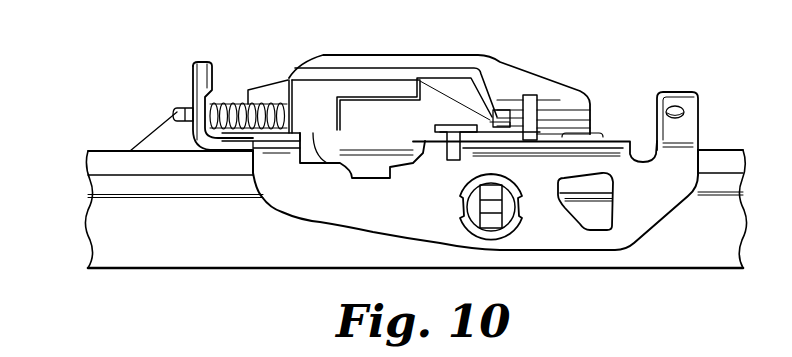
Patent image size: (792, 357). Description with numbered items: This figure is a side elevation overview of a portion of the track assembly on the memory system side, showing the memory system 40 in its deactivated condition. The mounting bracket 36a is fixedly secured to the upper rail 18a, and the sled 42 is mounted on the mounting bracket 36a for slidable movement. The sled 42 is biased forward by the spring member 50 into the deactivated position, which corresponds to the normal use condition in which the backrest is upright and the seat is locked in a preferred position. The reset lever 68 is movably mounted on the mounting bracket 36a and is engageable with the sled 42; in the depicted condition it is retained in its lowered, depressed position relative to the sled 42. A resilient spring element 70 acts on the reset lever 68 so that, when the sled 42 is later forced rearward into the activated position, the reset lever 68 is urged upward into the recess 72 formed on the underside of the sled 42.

The upper rail 18a is at (717, 150).
The mounting bracket 36a is at (367, 229).
The memory system 40 is at (554, 37).
The sled 42 is at (418, 65).
The spring member 50 is at (218, 102).
The reset lever 68 is at (360, 168).
The resilient spring element 70 is at (433, 133).
The recess 72 is at (347, 160).